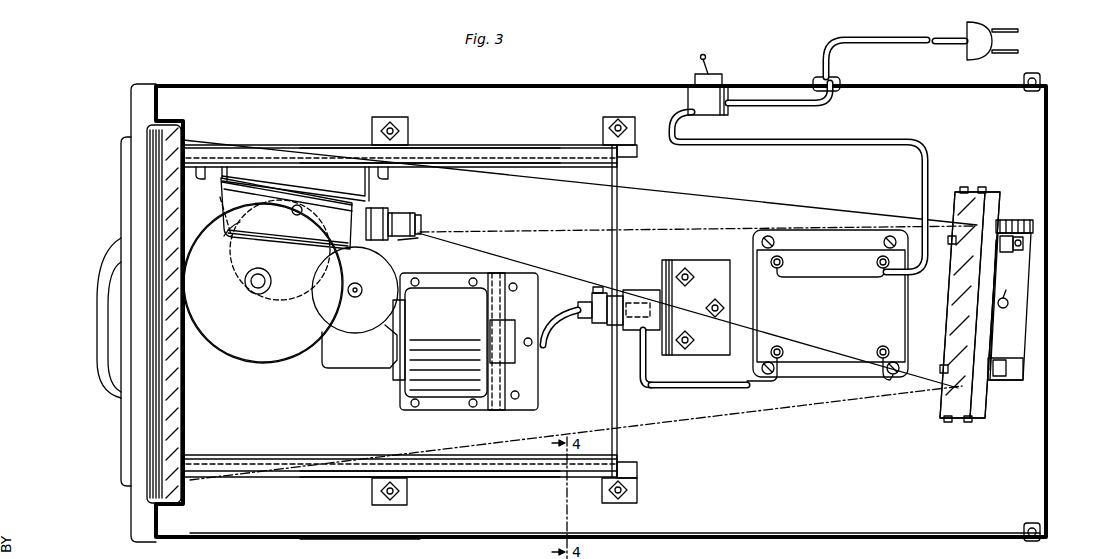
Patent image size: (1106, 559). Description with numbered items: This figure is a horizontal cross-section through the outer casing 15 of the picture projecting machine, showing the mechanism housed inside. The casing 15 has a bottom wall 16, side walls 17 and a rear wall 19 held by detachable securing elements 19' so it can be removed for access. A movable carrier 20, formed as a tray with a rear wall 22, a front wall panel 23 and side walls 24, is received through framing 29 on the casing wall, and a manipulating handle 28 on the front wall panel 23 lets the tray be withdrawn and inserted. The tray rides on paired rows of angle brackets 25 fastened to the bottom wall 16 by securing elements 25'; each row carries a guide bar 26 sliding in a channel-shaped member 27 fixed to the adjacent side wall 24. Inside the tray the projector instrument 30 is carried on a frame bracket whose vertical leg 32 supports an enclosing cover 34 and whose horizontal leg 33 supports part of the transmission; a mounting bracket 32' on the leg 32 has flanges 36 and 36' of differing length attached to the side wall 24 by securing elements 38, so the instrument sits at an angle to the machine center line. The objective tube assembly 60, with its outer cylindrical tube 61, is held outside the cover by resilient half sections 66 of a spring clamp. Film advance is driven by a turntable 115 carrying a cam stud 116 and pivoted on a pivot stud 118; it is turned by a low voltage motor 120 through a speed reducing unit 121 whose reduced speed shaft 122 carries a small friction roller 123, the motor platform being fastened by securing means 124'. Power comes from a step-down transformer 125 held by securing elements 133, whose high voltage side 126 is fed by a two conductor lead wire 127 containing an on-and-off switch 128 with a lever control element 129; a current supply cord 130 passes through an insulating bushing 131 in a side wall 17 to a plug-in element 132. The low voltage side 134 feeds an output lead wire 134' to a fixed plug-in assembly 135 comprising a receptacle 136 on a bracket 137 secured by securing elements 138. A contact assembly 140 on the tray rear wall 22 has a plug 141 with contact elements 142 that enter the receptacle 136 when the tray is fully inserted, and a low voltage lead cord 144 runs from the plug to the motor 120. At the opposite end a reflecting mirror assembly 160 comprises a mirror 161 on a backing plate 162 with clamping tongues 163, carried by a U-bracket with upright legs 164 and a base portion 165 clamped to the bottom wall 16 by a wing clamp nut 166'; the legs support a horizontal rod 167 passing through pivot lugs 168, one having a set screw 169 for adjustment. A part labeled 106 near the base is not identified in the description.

The housing or casing 15 is at (302, 80).
The bottom wall 16 is at (885, 466).
The side walls 17 is at (548, 84).
The rear wall 19 is at (1064, 400).
The detachable securing elements 19' is at (1050, 298).
The movable carrier 20 is at (112, 203).
The rear wall 22 is at (618, 210).
The front wall panel 23 is at (123, 221).
The side walls 24 is at (530, 167).
The angle brackets 25 is at (503, 311).
The securing elements 25' is at (504, 312).
The guide bar 26 is at (487, 145).
The channel-shaped member 27 is at (533, 148).
The manipulating handle 28 is at (98, 292).
The framing 29 is at (135, 320).
The projector instrument 30 is at (284, 245).
The vertical leg 32 is at (286, 208).
The mounting bracket 32' is at (288, 207).
The horizontal leg 33 is at (237, 272).
The enclosing cover 34 is at (240, 222).
The flange 36 is at (328, 184).
The flange 36' is at (239, 153).
The securing elements 38 is at (200, 178).
The objective tube assembly 60 is at (412, 221).
The outer cylindrical tube 61 is at (405, 245).
The spring clamp half sections 66 is at (383, 223).
The base 106 is at (355, 558).
The turntable 115 is at (225, 355).
The stud 116 is at (303, 232).
The pivot stud 118 is at (256, 285).
The driving motor 120 is at (462, 318).
The speed reducing unit 121 is at (353, 335).
The reduced speed shaft 122 is at (352, 290).
The friction roller 123 is at (360, 293).
The securing means 124' is at (489, 341).
The step-down transformer 125 is at (848, 316).
The high voltage side 126 is at (880, 262).
The two conductor lead wire 127 is at (866, 139).
The on-and-off switch 128 is at (712, 112).
The lever control element 129 is at (710, 72).
The current supply cord 130 is at (880, 45).
The insulating bushing 131 is at (842, 96).
The plug-in element 132 is at (982, 60).
The securing elements 133 is at (770, 242).
The low voltage side 134 is at (820, 358).
The output lead wire 134' is at (699, 399).
The fixed plug-in assembly 135 is at (639, 280).
The plug-in receptacle 136 is at (645, 333).
The bracket 137 is at (675, 262).
The securing elements 138 is at (705, 308).
The electric contact assembly 140 is at (583, 326).
The plug 141 is at (600, 325).
The contact elements 142 is at (616, 350).
The low voltage lead cord 144 is at (545, 340).
The reflecting mirror assembly 160 is at (981, 186).
The reflecting mirror 161 is at (955, 302).
The backing plate 162 is at (1000, 205).
The clamping tongues 163 is at (985, 192).
The upright leg portions 164 is at (1033, 227).
The connecting base portion 165 is at (1023, 280).
The wing clamp nut 166' is at (1045, 303).
The horizontal rod 167 is at (1005, 330).
The pivot lugs 168 is at (1020, 258).
The set screw 169 is at (1023, 243).